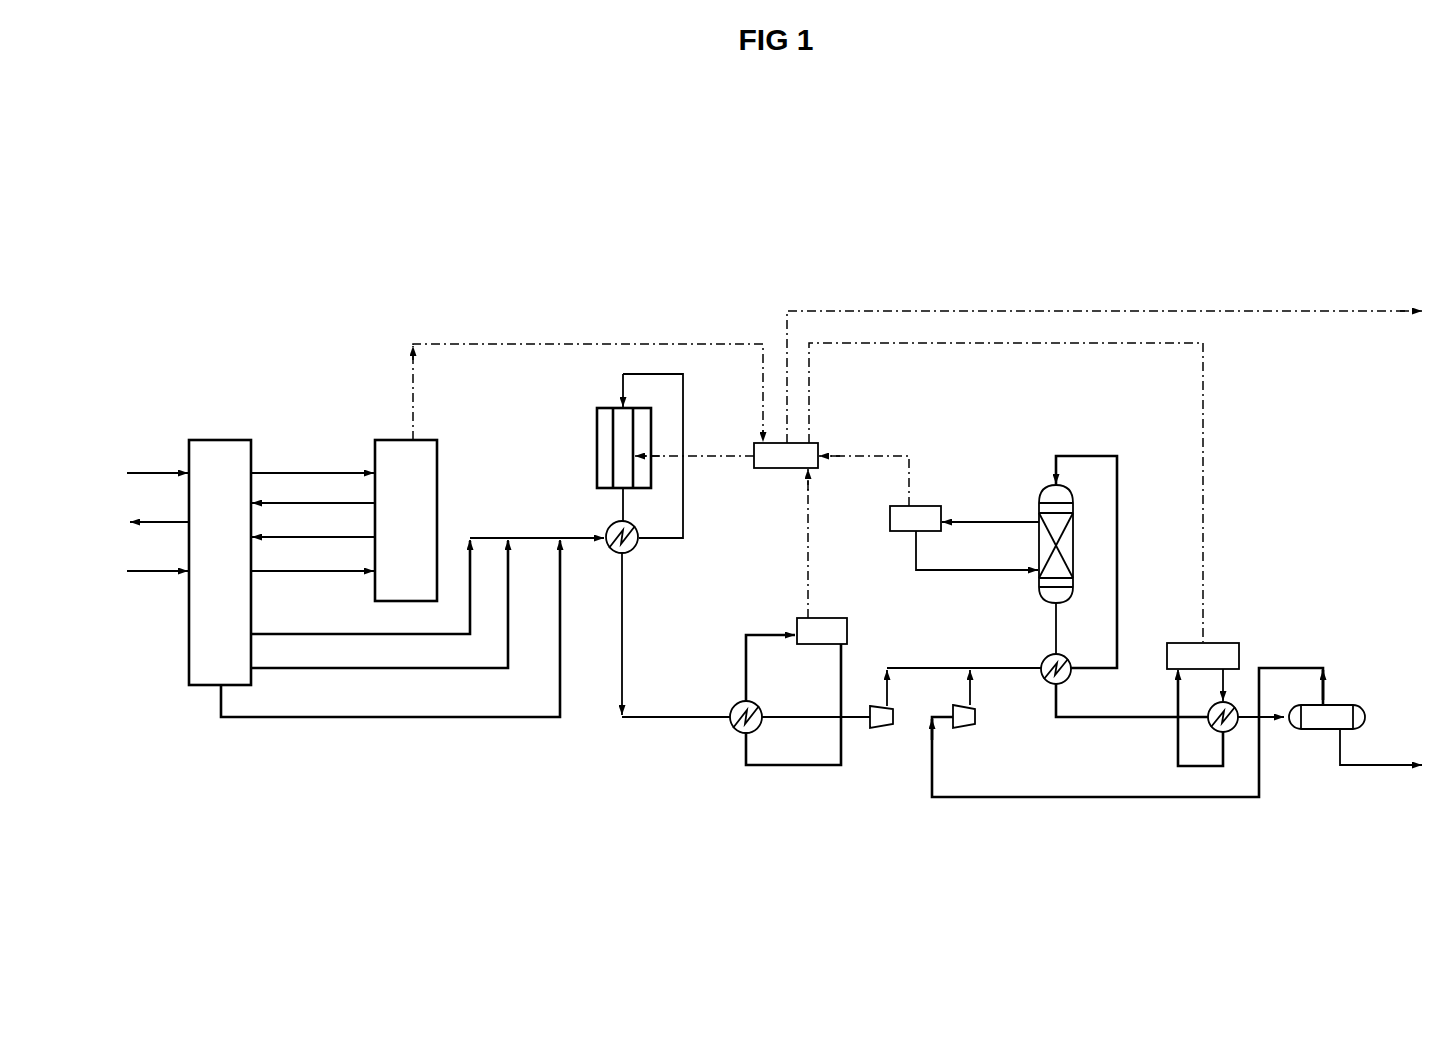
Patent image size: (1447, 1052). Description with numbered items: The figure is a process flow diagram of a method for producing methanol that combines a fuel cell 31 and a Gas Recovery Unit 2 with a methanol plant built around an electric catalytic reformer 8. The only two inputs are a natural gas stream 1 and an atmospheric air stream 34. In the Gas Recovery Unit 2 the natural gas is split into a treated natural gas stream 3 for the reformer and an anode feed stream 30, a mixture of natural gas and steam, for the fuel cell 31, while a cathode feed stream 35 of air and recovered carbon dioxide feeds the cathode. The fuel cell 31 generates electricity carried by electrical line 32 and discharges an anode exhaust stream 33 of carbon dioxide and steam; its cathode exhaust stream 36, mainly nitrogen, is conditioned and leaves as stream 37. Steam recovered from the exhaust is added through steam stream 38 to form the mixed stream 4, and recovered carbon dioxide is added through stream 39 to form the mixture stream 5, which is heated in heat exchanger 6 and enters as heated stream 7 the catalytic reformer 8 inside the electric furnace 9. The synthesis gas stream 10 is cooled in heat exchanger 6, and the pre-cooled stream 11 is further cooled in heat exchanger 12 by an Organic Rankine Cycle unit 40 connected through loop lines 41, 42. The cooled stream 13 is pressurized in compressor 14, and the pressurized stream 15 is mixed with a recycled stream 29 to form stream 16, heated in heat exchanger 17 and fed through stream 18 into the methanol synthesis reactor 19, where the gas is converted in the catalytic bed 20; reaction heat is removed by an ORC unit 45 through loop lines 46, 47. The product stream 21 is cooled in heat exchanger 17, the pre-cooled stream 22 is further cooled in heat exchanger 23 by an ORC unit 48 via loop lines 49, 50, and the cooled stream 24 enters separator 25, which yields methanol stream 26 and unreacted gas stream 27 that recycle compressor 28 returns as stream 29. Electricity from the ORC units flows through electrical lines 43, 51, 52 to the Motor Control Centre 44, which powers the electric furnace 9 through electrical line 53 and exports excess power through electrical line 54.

The natural gas stream 1 is at (163, 464).
The Gas Recovery Unit 2 is at (225, 430).
The treated natural gas stream 3 is at (418, 640).
The mixed natural gas and steam stream 4 is at (534, 532).
The natural gas, steam and carbon dioxide mixture stream 5 is at (580, 532).
The heat exchanger 6 is at (640, 549).
The heated mixture stream 7 is at (690, 403).
The electric catalytic reformer 8 is at (622, 423).
The electric furnace 9 is at (590, 447).
The synthesis gas stream 10 is at (630, 499).
The pre-cooled synthesis gas stream 11 is at (628, 612).
The heat exchanger 12 is at (724, 732).
The cooled stream 13 is at (777, 708).
The compressor 14 is at (877, 733).
The pressurized synthesis gas stream 15 is at (915, 663).
The mixed synthesis and recycle gas stream 16 is at (997, 663).
The heat exchanger 17 is at (1072, 685).
The reactor feed stream 18 is at (1080, 448).
The methanol synthesis reactor 19 is at (1039, 483).
The catalytic bed 20 is at (1040, 547).
The reactor outlet stream 21 is at (1062, 641).
The pre-cooled stream 22 is at (1080, 728).
The heat exchanger 23 is at (1213, 734).
The cooled stream 24 is at (1270, 731).
The separator 25 is at (1363, 695).
The methanol stream 26 is at (1388, 771).
The unreacted synthesis gas stream 27 is at (1320, 656).
The recycle compressor 28 is at (960, 736).
The recycled pressurized synthesis gas stream 29 is at (978, 692).
The anode feed stream 30 is at (334, 469).
The fuel cell 31 is at (386, 432).
The electrical line 32 is at (405, 379).
The anode exhaust stream 33 is at (283, 501).
The atmospheric air stream 34 is at (155, 579).
The cathode feed stream 35 is at (295, 580).
The cathode exhaust stream 36 is at (311, 534).
The conditioned exhaust stream 37 is at (154, 529).
The steam stream 38 is at (345, 673).
The carbon dioxide stream 39 is at (413, 726).
The Organic Rankine Cycle unit 40 is at (832, 614).
The ORC loop line 41 is at (848, 668).
The ORC loop line 42 is at (735, 659).
The electrical line 43 is at (800, 543).
The Motor Control Centre 44 is at (823, 439).
The Organic Rankine Cycle unit 45 is at (927, 495).
The ORC loop line 46 is at (968, 578).
The ORC loop line 47 is at (968, 513).
The Organic Rankine Cycle unit 48 is at (1218, 636).
The ORC loop line 49 is at (1220, 677).
The ORC loop line 50 is at (1170, 740).
The electrical line 51 is at (857, 466).
The electrical line 52 is at (1211, 490).
The electrical line 53 is at (718, 468).
The electrical line 54 is at (1348, 323).